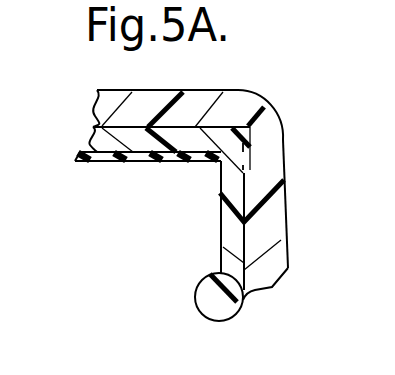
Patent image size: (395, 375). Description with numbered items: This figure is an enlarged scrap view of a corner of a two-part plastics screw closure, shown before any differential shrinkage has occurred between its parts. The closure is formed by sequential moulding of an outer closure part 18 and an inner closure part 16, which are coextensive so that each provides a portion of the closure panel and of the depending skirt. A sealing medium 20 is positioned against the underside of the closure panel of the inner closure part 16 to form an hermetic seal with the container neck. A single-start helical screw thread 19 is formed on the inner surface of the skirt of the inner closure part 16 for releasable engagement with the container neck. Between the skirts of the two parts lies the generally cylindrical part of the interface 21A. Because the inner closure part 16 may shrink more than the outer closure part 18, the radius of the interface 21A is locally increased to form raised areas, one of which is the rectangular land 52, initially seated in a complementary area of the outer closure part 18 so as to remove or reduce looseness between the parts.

The outer closure part 18 is at (95, 100).
The inner closure part 16 is at (97, 135).
The sealing medium 20 is at (133, 163).
The rectangular land 52 is at (243, 173).
The cylindrical part of the interface 21A is at (277, 230).
The helical screw thread 19 is at (207, 297).